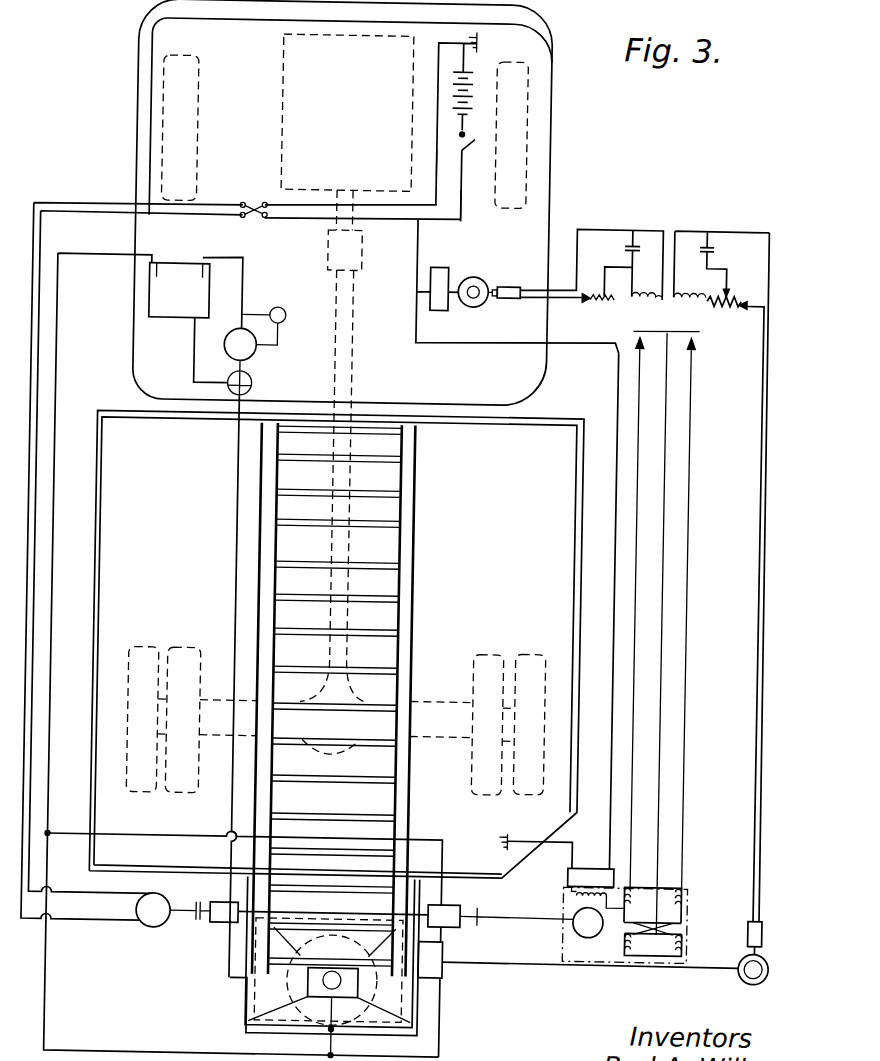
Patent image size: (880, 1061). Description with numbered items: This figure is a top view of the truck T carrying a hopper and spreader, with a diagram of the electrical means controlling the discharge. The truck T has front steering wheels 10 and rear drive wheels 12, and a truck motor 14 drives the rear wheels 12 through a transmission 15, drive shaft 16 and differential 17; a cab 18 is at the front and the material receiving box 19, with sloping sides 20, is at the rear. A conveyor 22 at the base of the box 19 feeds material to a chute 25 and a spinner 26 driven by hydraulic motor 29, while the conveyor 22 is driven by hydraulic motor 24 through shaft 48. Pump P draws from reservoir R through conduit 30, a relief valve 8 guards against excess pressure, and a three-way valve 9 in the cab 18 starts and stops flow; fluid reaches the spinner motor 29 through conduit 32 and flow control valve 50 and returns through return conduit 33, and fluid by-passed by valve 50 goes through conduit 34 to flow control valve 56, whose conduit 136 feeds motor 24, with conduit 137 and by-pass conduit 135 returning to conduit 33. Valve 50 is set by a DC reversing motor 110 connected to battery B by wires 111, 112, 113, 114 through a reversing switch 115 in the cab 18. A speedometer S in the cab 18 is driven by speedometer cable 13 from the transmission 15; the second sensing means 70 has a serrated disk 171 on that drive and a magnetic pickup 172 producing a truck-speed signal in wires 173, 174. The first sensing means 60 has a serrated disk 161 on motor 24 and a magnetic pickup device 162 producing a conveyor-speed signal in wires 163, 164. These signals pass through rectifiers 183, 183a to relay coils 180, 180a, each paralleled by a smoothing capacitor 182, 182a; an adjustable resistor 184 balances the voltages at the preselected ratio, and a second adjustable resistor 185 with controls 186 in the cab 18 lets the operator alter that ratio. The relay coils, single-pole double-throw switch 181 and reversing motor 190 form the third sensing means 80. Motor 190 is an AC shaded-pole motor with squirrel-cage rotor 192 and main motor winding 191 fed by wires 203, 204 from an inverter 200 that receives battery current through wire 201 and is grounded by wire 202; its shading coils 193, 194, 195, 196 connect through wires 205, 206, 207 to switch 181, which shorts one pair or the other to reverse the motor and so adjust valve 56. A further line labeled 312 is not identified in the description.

The truck T is at (548, 137).
The cab 18 is at (128, 140).
The front steering wheels 10 is at (190, 115).
The truck motor 14 is at (275, 58).
The battery B is at (470, 67).
The wire 113 is at (430, 172).
The wire 114 is at (456, 212).
The reversing switch 115 is at (237, 222).
The wire 111 is at (78, 894).
The wire 112 is at (78, 925).
The return conduit 33 is at (57, 975).
The reservoir R is at (179, 290).
The conduit 30 is at (238, 291).
The relief valve 8 is at (280, 311).
The pump mechanism P is at (240, 344).
The three-way valve 9 is at (249, 386).
The transmission 15 is at (323, 251).
The drive shaft 16 is at (349, 649).
The differential 17 is at (315, 754).
The speedometer cable 13 is at (412, 290).
The speedometer S is at (518, 287).
The second sensing means 70 is at (469, 276).
The serrated disk 171 is at (459, 304).
The magnetic pickup 172 is at (500, 286).
The wire 173 is at (540, 287).
The wire 174 is at (530, 299).
The rectifier 183a is at (582, 300).
The second adjustable resistor 185 is at (594, 302).
The controls 186 is at (600, 284).
The smoothing capacitor 182a is at (624, 245).
The relay coil 180a is at (682, 296).
The smoothing capacitor 182 is at (710, 244).
The adjustable resistor 184 is at (722, 282).
The relay coil 180 is at (714, 300).
The rectifier 183 is at (745, 300).
The third sensing means 80 is at (680, 220).
The reversing motor 190 is at (605, 306).
The single-pole double-throw switch 181 is at (664, 332).
The wire 201 is at (615, 610).
The wire 164 is at (758, 598).
The wire 163 is at (767, 614).
The material receiving box 19 is at (101, 416).
The sides 20 is at (138, 471).
The wire 202 is at (528, 840).
The conveyor 22 is at (413, 535).
The rear drive wheels 12 is at (531, 654).
The conductor 312 is at (236, 536).
The by-pass conduit 135 is at (449, 890).
The conduit 32 is at (236, 948).
The chute 25 is at (255, 1001).
The hydraulic motor 29 is at (348, 964).
The shaft 48 is at (353, 985).
The spinner 26 is at (369, 1020).
The reversing motor 110 is at (173, 910).
The flow control valve 50 is at (224, 911).
The conduit 34 is at (291, 913).
The flow control valve 56 is at (500, 917).
The conduit 136 is at (456, 934).
The hydraulic motor 24 is at (450, 972).
The conduit 137 is at (449, 1012).
The inverter 200 is at (582, 864).
The wire 203 is at (567, 885).
The main motor winding 191 is at (572, 897).
The squirrel-cage rotor 192 is at (587, 922).
The shading coil 196 is at (632, 905).
The wire 204 is at (638, 925).
The shading coil 194 is at (690, 904).
The shading coil 193 is at (632, 946).
The shading coil 195 is at (682, 954).
The wire 205 is at (636, 872).
The wire 206 is at (663, 878).
The wire 207 is at (688, 878).
The magnetic pickup device 162 is at (769, 922).
The serrated disk 161 is at (768, 952).
The first sensing means 60 is at (776, 979).